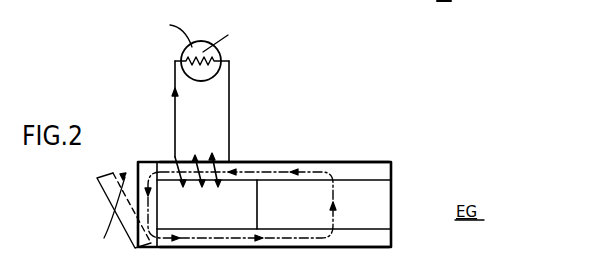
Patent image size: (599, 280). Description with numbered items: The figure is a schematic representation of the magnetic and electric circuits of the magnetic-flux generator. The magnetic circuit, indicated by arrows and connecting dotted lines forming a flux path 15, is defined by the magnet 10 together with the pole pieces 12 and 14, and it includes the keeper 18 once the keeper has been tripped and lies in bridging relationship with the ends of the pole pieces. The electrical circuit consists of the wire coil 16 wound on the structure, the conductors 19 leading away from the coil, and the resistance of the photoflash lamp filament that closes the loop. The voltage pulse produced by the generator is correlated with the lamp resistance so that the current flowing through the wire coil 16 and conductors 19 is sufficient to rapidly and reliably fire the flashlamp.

The magnet 10 is at (393, 204).
The pole piece 12 is at (360, 246).
The pole piece 14 is at (358, 167).
The magnetic flux path 15 is at (242, 240).
The wire coil 16 is at (200, 186).
The keeper 18 is at (135, 227).
The conductors 19 is at (228, 122).